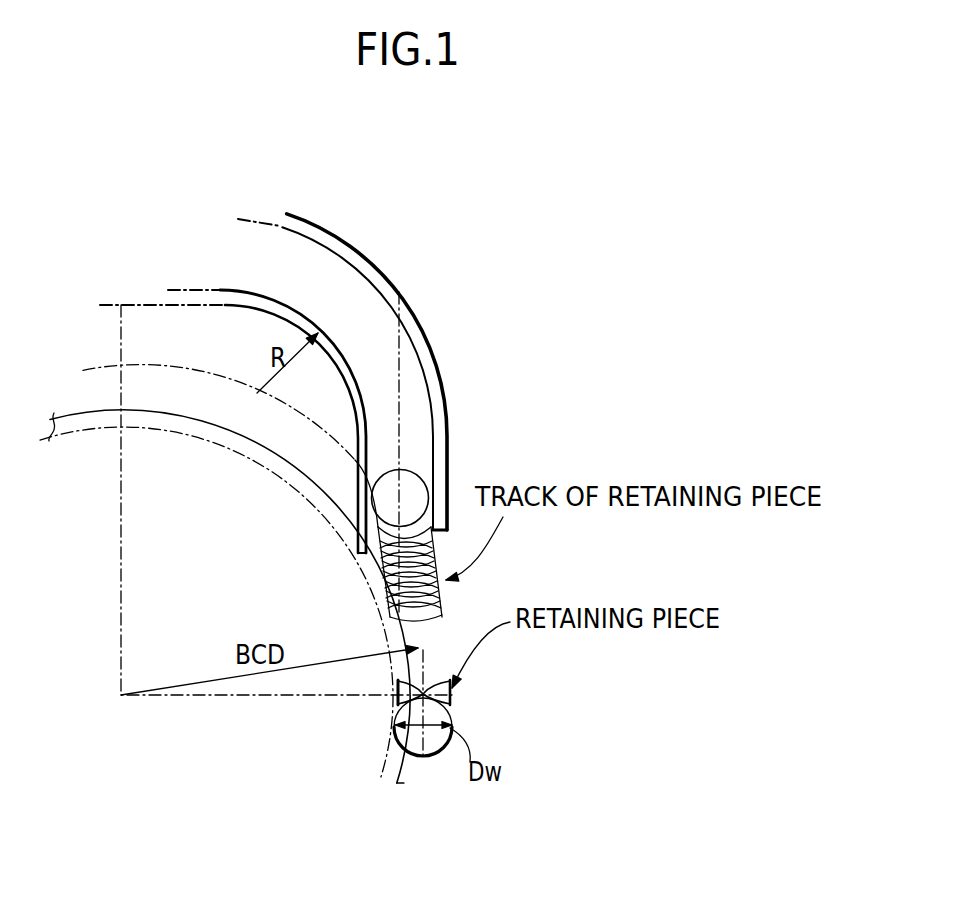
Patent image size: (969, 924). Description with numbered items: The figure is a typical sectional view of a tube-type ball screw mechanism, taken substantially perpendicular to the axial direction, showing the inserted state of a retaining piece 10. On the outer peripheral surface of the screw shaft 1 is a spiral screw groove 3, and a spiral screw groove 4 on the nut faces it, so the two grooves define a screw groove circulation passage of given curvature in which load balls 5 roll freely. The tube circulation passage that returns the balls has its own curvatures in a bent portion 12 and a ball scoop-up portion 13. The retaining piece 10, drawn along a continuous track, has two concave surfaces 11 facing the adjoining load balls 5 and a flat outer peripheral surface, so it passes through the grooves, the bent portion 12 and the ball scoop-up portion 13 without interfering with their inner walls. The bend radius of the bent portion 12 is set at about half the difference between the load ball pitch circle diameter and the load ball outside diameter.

The screw shaft 1 is at (236, 589).
The screw groove 3 is at (222, 442).
The screw groove 4 is at (212, 383).
The load ball 5 is at (418, 493).
The retaining piece 10 is at (377, 588).
The concave surface 11 is at (398, 683).
The bent portion 12 is at (368, 297).
The ball scoop-up portion 13 is at (440, 600).